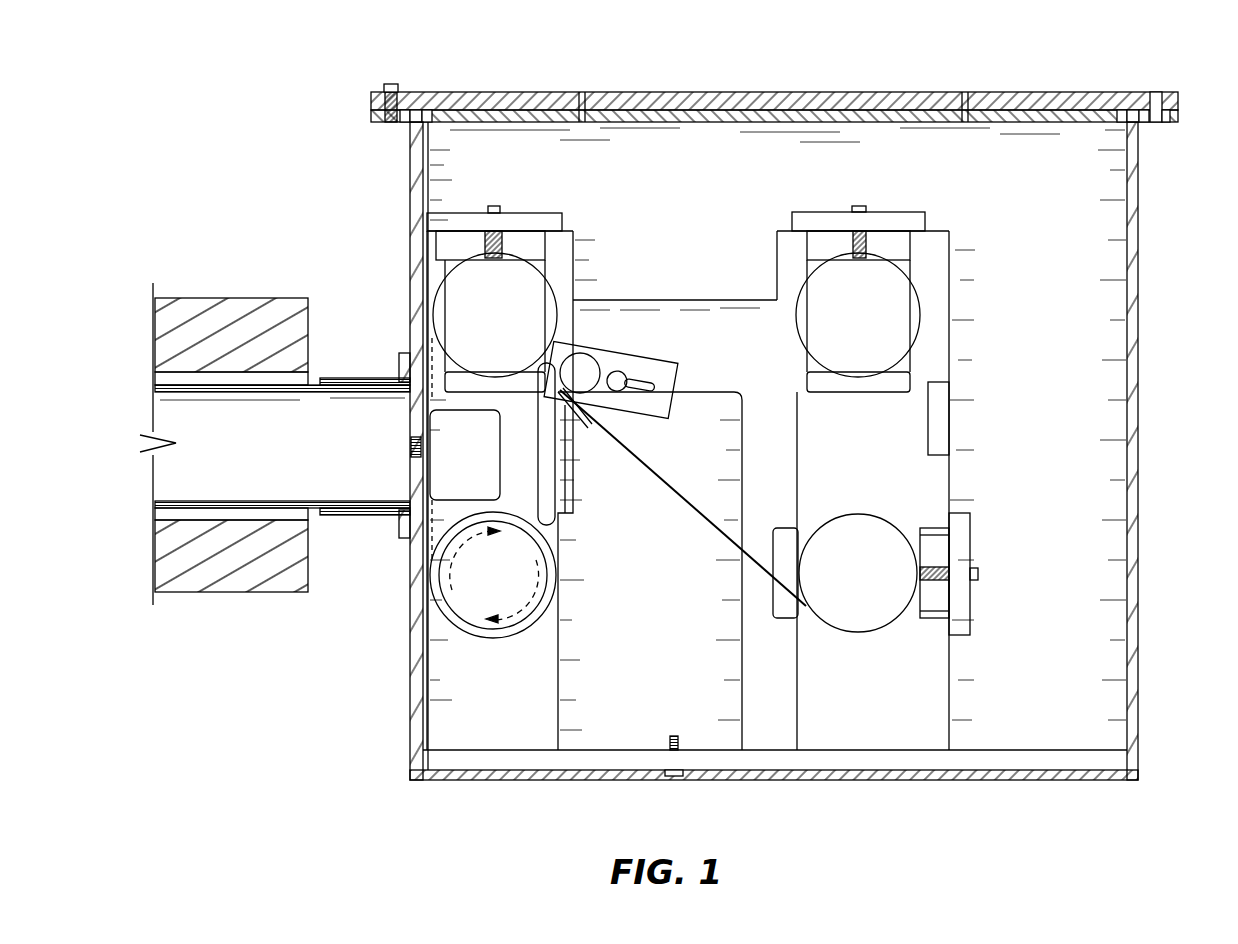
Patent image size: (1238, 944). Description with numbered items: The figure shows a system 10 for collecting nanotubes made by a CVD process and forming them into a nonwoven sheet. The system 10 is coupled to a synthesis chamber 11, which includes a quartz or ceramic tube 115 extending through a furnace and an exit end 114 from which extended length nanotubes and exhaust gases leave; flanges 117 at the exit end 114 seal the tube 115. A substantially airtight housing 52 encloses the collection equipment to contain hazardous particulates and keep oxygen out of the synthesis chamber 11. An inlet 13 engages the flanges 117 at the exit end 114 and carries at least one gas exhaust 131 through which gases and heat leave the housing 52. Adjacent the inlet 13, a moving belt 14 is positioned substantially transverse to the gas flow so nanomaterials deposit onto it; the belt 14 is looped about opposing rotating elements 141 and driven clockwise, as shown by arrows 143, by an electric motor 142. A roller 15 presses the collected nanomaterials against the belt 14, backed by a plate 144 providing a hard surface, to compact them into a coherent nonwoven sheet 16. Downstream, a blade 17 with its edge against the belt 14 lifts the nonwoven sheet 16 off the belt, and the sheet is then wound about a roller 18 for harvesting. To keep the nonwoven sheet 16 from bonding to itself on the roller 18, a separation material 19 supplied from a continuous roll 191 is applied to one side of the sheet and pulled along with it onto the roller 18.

The system 10 is at (236, 74).
The synthesis chamber 11 is at (206, 286).
The exit end 114 is at (175, 372).
The tube 115 is at (210, 576).
The inlet 13 is at (410, 490).
The gas exhaust 131 is at (410, 452).
The flanges 117 is at (400, 532).
The belt 14 is at (432, 345).
The rotating elements 141 is at (520, 329).
The electric motor 142 is at (520, 589).
The arrows 143 is at (548, 568).
The plate 144 is at (548, 430).
The roller 15 is at (580, 372).
The nonwoven sheet 16 is at (672, 490).
The blade 17 is at (588, 430).
The roller 18 is at (876, 587).
The separation material 19 is at (797, 458).
The continuous roll 191 is at (883, 329).
The housing 52 is at (1138, 290).